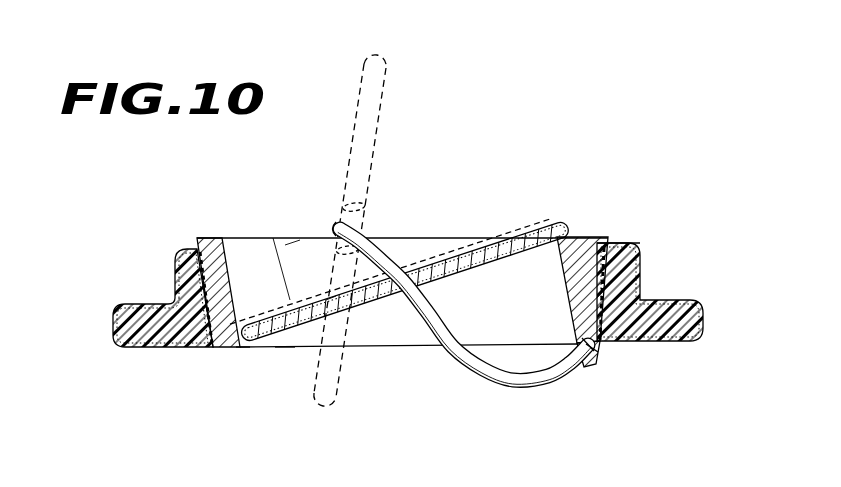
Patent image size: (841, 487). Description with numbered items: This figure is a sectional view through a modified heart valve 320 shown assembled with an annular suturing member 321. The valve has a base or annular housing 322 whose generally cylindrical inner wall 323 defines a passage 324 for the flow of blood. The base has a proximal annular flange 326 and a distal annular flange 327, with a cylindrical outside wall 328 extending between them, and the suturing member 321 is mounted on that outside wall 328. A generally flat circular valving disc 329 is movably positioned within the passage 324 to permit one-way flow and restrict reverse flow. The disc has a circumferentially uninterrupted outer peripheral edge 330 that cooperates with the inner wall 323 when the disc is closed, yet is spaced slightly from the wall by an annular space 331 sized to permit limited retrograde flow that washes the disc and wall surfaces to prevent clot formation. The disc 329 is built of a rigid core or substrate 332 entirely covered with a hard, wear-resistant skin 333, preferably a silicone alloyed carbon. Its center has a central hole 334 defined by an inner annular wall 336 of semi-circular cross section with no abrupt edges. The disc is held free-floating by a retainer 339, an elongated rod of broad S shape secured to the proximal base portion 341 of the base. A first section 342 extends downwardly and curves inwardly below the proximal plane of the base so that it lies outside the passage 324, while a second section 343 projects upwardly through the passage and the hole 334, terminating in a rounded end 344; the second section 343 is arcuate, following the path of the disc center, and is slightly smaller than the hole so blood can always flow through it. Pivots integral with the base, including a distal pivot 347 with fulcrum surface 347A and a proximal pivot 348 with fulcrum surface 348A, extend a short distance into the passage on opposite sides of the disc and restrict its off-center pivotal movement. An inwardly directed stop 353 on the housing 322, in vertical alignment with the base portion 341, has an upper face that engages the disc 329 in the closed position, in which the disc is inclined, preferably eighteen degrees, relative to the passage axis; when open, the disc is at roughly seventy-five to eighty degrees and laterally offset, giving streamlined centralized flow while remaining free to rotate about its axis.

The heart valve 320 is at (508, 122).
The annular suturing member 321 is at (687, 300).
The base or annular housing 322 is at (600, 231).
The annular inner wall 323 is at (234, 238).
The passage or opening 324 is at (402, 292).
The proximal annular flange 326 is at (200, 238).
The distal annular flange 327 is at (220, 347).
The cylindrical outside wall 328 is at (637, 258).
The valving disc 329 is at (357, 125).
The outer peripheral edge 330 is at (380, 60).
The annular space 331 is at (243, 350).
The core or substrate 332 is at (285, 347).
The coat or skin 333 is at (473, 238).
The central hole 334 is at (402, 330).
The inner annular wall 336 is at (375, 318).
The retainer 339 is at (509, 392).
The proximal base portion 341 is at (598, 352).
The first section 342 is at (559, 386).
The second section 343 is at (388, 240).
The rounded end 344 is at (333, 224).
The distal pivot 347 is at (290, 247).
The fulcrum surface 347A is at (330, 297).
The proximal pivot 348 is at (398, 335).
The fulcrum surface 348A is at (352, 318).
The abutment or stop 353 is at (557, 268).